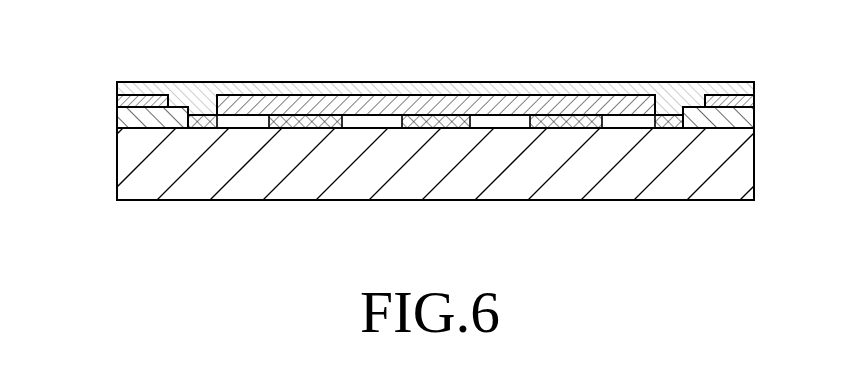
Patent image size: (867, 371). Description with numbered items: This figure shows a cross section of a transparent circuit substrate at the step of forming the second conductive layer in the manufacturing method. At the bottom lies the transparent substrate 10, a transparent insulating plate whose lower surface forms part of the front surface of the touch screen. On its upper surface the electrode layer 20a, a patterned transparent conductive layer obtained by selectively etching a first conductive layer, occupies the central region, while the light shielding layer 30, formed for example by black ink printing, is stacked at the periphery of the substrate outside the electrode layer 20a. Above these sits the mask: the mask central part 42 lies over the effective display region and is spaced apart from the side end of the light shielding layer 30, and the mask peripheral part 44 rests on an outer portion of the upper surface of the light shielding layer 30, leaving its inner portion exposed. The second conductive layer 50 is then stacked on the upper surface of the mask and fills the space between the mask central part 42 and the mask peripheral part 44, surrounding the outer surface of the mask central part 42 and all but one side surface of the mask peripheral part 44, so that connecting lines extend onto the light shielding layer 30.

The transparent substrate 10 is at (738, 170).
The electrode layer 20a is at (494, 94).
The light shielding layer 30 is at (118, 118).
The mask central part 42 is at (318, 94).
The mask peripheral part 44 is at (118, 99).
The second conductive layer 50 is at (675, 100).